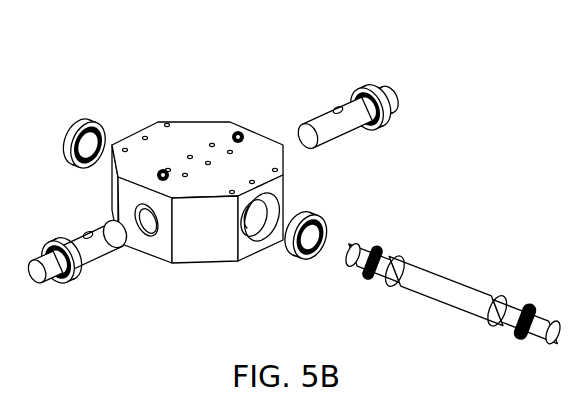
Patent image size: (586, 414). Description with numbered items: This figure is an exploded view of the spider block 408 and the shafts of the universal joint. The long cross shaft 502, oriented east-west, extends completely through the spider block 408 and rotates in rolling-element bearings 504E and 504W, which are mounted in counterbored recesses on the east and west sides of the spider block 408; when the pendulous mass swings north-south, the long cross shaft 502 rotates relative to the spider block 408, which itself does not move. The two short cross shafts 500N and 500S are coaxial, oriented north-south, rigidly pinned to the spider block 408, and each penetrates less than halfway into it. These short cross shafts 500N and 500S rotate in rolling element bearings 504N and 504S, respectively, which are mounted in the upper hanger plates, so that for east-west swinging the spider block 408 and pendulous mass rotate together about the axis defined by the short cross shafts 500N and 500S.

The spider block 408 is at (195, 120).
The short cross shaft 500N is at (322, 112).
The rolling element bearing 504N is at (378, 128).
The rolling-element bearing 504W is at (70, 122).
The rolling-element bearing 504E is at (330, 220).
The short cross shaft 500S is at (103, 250).
The rolling element bearing 504S is at (78, 275).
The long cross shaft 502 is at (375, 278).